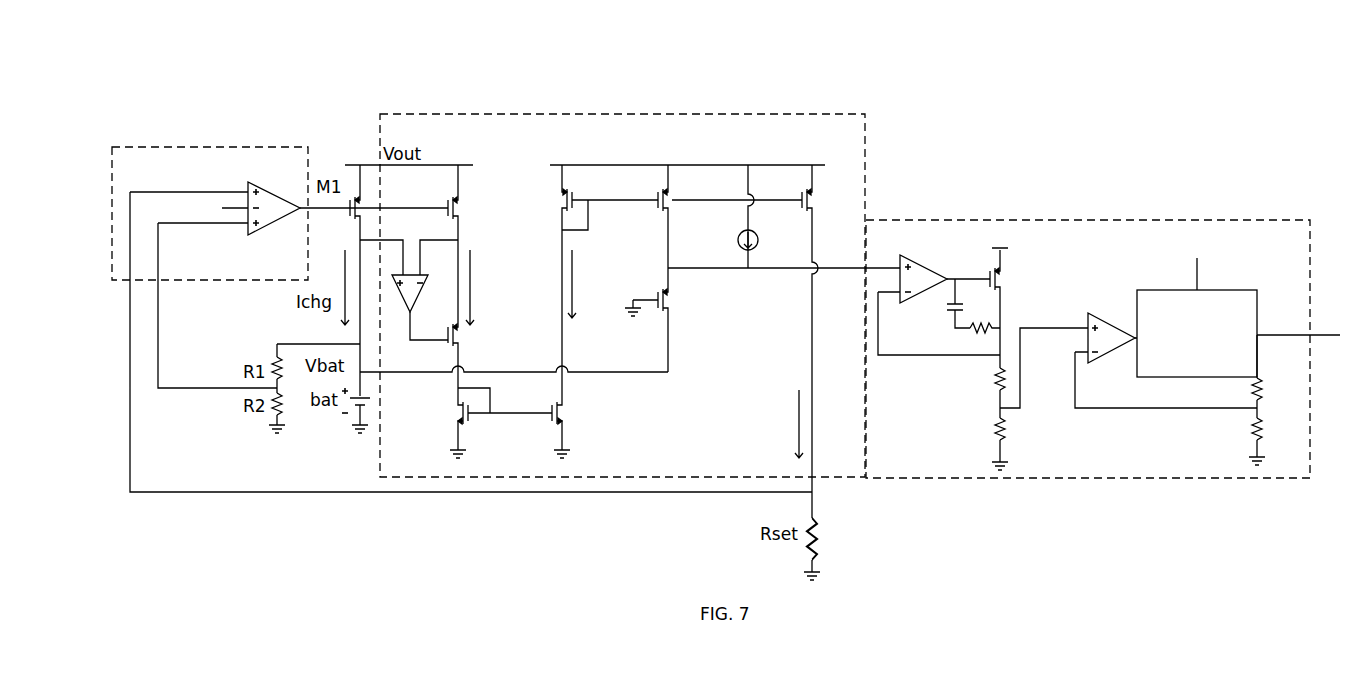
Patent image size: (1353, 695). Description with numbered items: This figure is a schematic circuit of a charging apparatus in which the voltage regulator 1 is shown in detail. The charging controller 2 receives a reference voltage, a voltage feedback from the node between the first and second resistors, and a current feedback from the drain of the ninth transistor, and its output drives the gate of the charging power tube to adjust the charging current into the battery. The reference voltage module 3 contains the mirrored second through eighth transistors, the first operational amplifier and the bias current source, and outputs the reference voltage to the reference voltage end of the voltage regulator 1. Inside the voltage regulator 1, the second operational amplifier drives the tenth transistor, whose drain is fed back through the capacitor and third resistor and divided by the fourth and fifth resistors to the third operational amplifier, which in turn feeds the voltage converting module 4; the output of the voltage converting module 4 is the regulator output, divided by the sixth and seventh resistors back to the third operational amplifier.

The voltage regulator 1 is at (1103, 307).
The charging controller 2 is at (193, 147).
The reference voltage module 3 is at (588, 114).
The voltage converting module 4 is at (1228, 290).